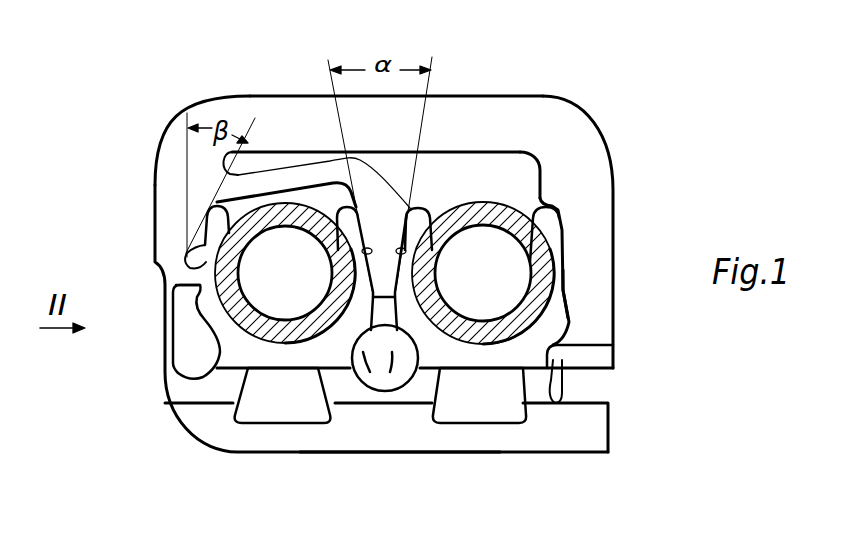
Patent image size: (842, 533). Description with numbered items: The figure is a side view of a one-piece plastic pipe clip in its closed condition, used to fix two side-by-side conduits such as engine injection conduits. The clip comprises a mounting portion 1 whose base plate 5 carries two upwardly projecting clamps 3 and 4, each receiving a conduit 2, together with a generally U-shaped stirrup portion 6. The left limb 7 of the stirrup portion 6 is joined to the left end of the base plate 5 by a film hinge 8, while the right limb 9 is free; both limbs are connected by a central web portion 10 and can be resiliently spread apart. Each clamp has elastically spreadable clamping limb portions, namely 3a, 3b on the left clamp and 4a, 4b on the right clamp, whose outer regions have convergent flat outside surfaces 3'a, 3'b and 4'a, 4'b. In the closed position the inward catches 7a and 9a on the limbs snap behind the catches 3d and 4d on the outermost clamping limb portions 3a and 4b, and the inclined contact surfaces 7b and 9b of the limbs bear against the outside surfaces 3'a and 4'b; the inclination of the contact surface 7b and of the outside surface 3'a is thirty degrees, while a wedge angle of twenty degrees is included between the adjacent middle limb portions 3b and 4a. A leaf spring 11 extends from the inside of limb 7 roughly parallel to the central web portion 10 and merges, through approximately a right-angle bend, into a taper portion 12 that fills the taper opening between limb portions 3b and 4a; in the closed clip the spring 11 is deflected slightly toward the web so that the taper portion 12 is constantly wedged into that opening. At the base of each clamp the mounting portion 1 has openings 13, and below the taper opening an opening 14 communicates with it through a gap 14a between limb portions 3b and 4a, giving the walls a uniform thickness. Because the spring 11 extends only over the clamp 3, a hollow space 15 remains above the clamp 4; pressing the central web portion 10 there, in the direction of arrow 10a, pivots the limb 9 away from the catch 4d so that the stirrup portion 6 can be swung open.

The mounting portion 1 is at (386, 461).
The conduit 2 is at (338, 276).
The clamp 3 is at (161, 330).
The clamping limb portion 3a is at (193, 307).
The clamping limb portion 3b is at (283, 395).
The catch 3d is at (180, 263).
The outside surface 3'a is at (157, 217).
The outside surface 3'b is at (289, 273).
The clamp 4 is at (538, 330).
The clamping limb portion 4a is at (385, 358).
The clamping limb portion 4b is at (560, 287).
The catch 4d is at (560, 325).
The outside surface 4'a is at (447, 244).
The outside surface 4'b is at (604, 208).
The base plate 5 is at (390, 437).
The stirrup portion 6 is at (257, 97).
The limb 7 is at (246, 228).
The catch 7a is at (257, 300).
The contact surface 7b is at (193, 248).
The film hinge 8 is at (168, 342).
The limb 9 is at (598, 244).
The catch 9a is at (566, 362).
The contact surface 9b is at (514, 296).
The central web portion 10 is at (383, 228).
The arrow 10a is at (447, 97).
The leaf spring 11 is at (433, 151).
The taper portion 12 is at (349, 356).
The opening 13 is at (362, 436).
The opening 14 is at (362, 348).
The gap 14a is at (410, 297).
The hollow space 15 is at (507, 168).